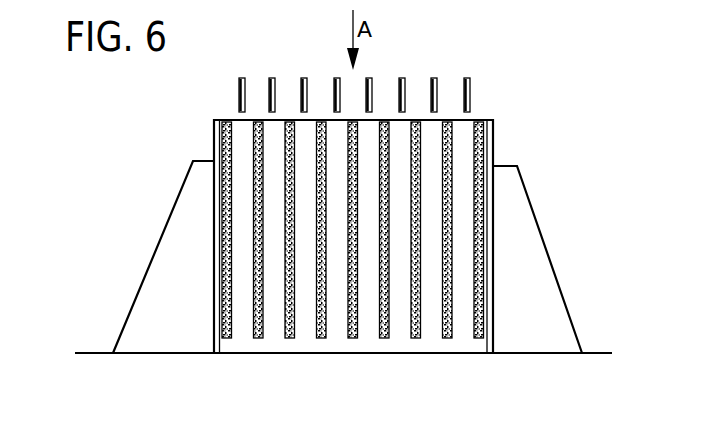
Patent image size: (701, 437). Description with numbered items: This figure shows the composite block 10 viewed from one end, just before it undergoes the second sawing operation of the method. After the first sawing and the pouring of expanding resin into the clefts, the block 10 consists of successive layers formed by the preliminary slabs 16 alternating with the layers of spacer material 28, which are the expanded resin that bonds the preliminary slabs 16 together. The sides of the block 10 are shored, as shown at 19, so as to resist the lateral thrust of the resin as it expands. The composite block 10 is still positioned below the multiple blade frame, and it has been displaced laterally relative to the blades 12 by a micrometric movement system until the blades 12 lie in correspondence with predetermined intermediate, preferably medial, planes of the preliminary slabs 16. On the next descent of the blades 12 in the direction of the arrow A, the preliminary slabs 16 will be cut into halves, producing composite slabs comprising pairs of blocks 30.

The block 10 is at (510, 141).
The blades 12 is at (332, 88).
The preliminary slabs 16 is at (273, 281).
The shoring 19 is at (178, 233).
The layers of spacer material 28 is at (226, 151).
The blocks 30 is at (216, 138).